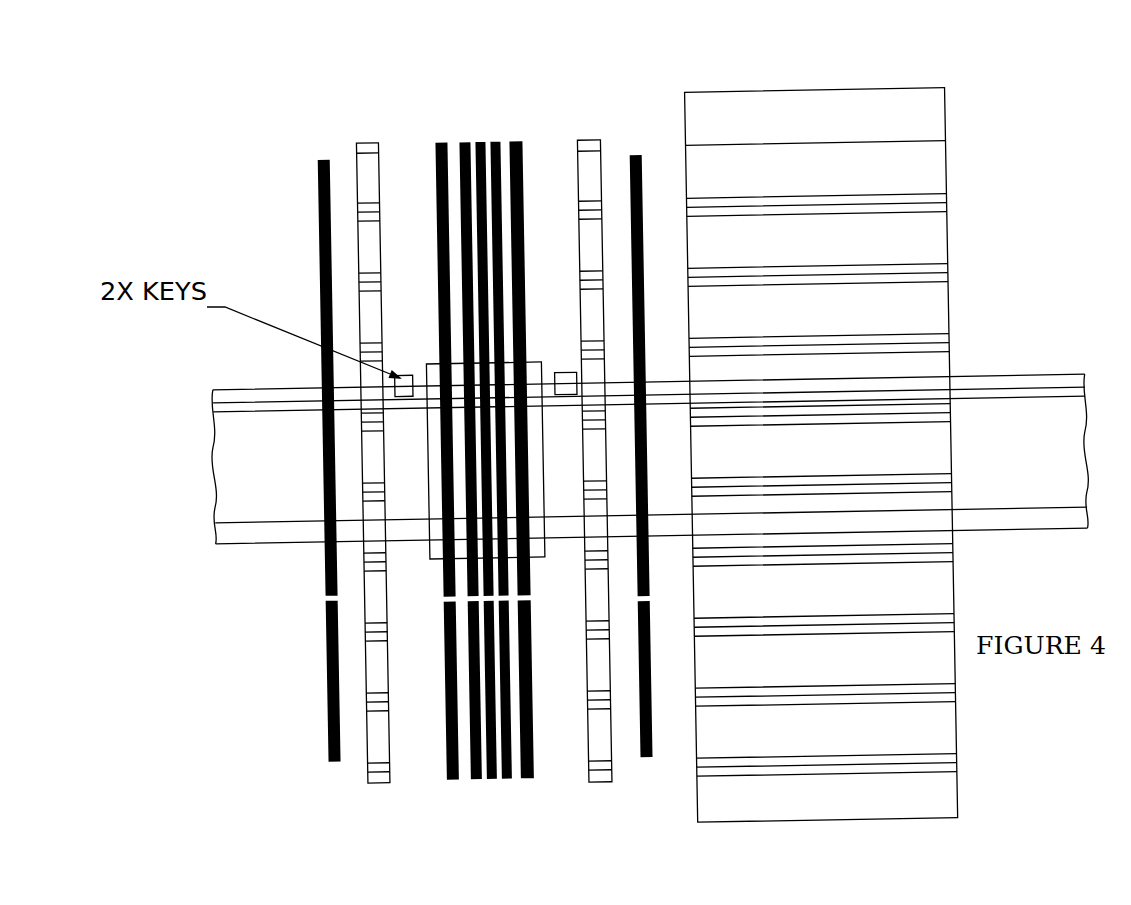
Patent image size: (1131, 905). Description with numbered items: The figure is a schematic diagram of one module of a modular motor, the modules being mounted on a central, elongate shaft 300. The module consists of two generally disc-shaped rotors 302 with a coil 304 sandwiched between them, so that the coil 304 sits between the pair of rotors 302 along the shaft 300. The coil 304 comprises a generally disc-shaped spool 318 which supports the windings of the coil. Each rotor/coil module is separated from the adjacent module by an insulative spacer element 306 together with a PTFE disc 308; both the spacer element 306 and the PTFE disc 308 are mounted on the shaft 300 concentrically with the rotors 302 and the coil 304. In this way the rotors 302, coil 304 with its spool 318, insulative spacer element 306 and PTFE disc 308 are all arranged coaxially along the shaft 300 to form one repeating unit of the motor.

The shaft 300 is at (669, 443).
The rotor 302 is at (367, 143).
The coil 304 is at (480, 142).
The insulative spacer element 306 is at (891, 439).
The PTFE disc 308 is at (340, 765).
The spool 318 is at (561, 490).